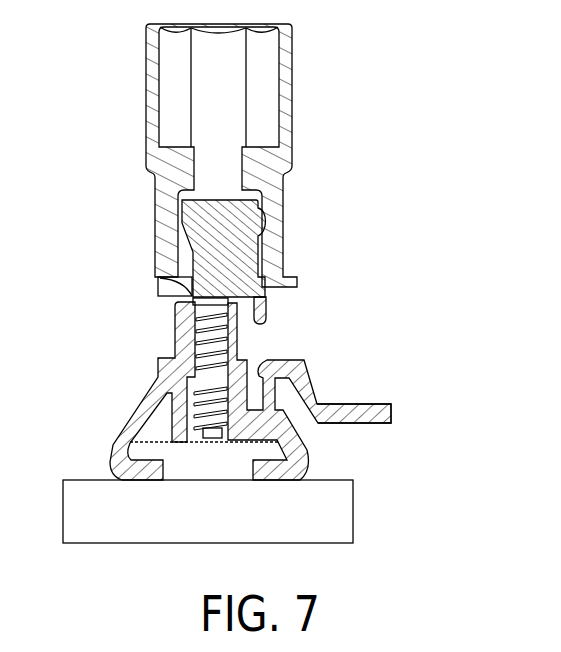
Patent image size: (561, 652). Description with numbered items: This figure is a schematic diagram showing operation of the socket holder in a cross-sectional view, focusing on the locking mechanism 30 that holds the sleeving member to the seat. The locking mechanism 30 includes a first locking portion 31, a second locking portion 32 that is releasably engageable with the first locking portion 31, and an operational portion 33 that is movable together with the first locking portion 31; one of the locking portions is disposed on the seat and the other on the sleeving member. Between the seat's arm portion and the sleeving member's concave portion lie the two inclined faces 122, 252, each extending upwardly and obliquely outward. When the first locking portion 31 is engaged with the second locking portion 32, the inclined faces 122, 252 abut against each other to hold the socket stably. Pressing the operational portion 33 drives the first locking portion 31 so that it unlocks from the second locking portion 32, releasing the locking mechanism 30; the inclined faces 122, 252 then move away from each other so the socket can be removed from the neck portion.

The inclined face 252 is at (186, 244).
The inclined face 122 is at (157, 278).
The second locking portion 32 is at (260, 302).
The first locking portion 31 is at (259, 372).
The operational portion 33 is at (353, 412).
The locking mechanism 30 is at (449, 243).